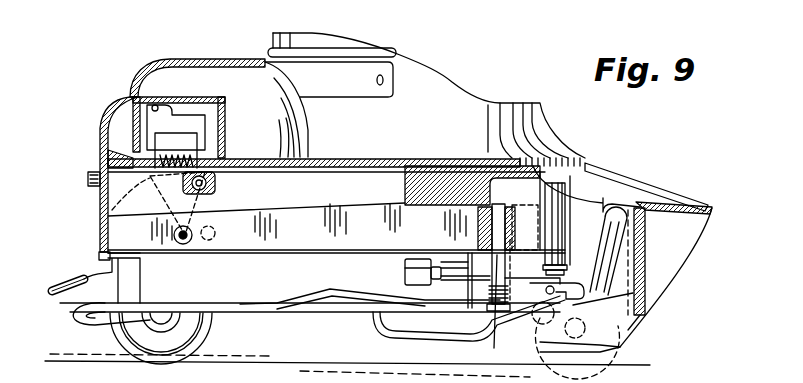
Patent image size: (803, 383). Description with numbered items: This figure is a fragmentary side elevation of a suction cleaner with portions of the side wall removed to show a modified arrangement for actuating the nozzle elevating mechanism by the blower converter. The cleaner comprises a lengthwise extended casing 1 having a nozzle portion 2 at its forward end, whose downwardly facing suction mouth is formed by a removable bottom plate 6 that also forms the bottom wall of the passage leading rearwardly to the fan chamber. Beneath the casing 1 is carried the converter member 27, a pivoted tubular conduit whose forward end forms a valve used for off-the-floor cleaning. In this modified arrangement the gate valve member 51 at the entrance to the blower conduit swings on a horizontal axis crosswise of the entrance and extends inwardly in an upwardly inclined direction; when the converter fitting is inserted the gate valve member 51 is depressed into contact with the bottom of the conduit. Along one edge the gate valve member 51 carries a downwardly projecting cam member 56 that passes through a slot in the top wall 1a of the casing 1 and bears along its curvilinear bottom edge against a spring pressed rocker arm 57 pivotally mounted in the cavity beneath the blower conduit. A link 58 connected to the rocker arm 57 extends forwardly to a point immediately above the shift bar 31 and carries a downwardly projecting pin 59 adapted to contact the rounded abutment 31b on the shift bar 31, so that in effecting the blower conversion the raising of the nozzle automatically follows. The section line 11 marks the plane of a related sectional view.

The casing 1 is at (435, 195).
The top wall 1a is at (262, 172).
The nozzle portion 2 is at (655, 190).
The bottom plate 6 is at (377, 346).
The section line 11 is at (185, 30).
The converter member 27 is at (278, 291).
The shift bar 31 is at (570, 275).
The rounded abutment 31b is at (494, 337).
The gate valve member 51 is at (195, 128).
The cam member 56 is at (100, 215).
The rocker arm 57 is at (168, 216).
The link 58 is at (375, 232).
The pin 59 is at (492, 286).